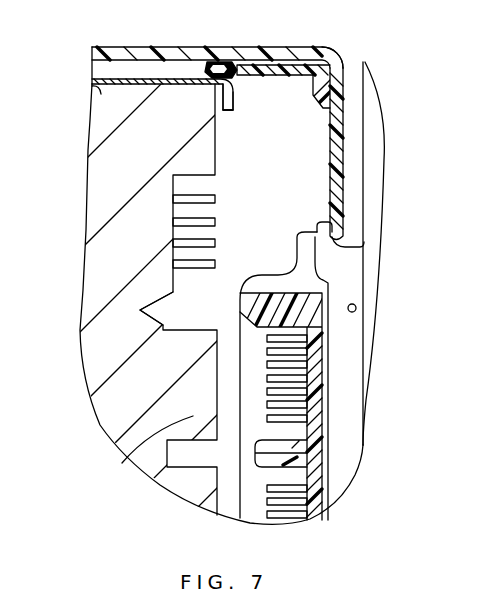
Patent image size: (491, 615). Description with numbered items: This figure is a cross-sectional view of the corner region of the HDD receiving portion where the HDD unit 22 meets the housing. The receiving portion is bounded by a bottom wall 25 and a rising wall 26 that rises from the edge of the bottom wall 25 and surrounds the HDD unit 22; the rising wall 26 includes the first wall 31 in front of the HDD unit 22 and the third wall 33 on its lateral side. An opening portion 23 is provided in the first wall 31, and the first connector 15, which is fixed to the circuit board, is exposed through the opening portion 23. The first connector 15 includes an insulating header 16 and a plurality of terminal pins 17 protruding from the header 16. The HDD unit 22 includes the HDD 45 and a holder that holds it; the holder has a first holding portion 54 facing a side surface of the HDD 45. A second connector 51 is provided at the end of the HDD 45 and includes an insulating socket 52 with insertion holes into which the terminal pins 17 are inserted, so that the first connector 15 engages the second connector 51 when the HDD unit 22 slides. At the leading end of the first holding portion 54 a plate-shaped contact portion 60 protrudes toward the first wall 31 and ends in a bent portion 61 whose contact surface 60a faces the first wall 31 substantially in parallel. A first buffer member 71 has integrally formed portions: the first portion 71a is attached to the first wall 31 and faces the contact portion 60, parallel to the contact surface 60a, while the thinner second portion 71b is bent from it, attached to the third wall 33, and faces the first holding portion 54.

The first connector 15 is at (340, 343).
The header 16 is at (317, 443).
The terminal pins 17 is at (300, 418).
The HDD unit 22 is at (104, 225).
The opening portion 23 is at (341, 245).
The bottom wall 25 is at (300, 103).
The rising wall 26 is at (138, 38).
The first wall 31 is at (338, 147).
The third wall 33 is at (170, 56).
The HDD 45 is at (95, 306).
The second connector 51 is at (172, 363).
The socket 52 is at (137, 455).
The first holding portion 54 is at (97, 95).
The contact portion 60 is at (213, 47).
The contact surface 60a is at (235, 109).
The bent portion 61 is at (234, 98).
The first buffer member 71 is at (342, 53).
The first portion 71a is at (331, 92).
The second portion 71b is at (272, 66).